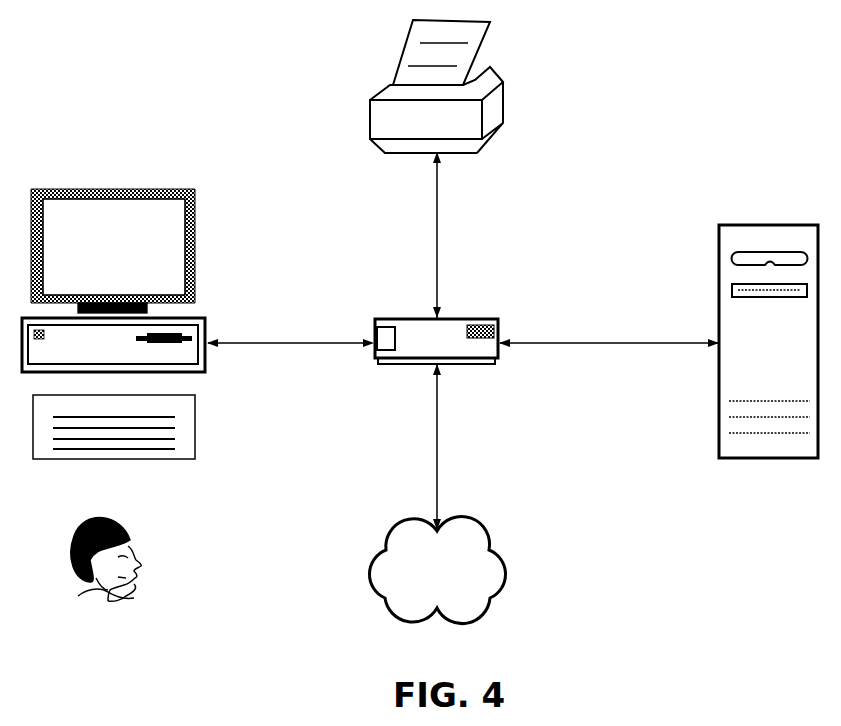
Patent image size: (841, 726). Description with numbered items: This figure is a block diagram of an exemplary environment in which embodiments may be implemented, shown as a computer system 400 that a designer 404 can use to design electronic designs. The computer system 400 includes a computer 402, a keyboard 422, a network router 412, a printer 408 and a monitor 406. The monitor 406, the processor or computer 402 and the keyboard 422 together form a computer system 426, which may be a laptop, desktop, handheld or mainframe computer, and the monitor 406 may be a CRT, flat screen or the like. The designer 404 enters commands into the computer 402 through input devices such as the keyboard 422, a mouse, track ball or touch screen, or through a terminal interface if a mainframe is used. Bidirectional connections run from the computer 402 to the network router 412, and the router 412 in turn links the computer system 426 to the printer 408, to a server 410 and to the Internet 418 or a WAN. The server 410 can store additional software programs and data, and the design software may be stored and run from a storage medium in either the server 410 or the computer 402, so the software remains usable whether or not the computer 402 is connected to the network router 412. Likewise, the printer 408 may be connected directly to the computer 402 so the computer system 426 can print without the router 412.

The computer system 400 is at (700, 94).
The computer 402 is at (205, 318).
The designer 404 is at (134, 523).
The monitor 406 is at (194, 190).
The printer 408 is at (370, 125).
The server 410 is at (722, 443).
The network router 412 is at (468, 319).
The Internet 418 is at (470, 538).
The keyboard 422 is at (195, 420).
The computer system 426 is at (198, 243).